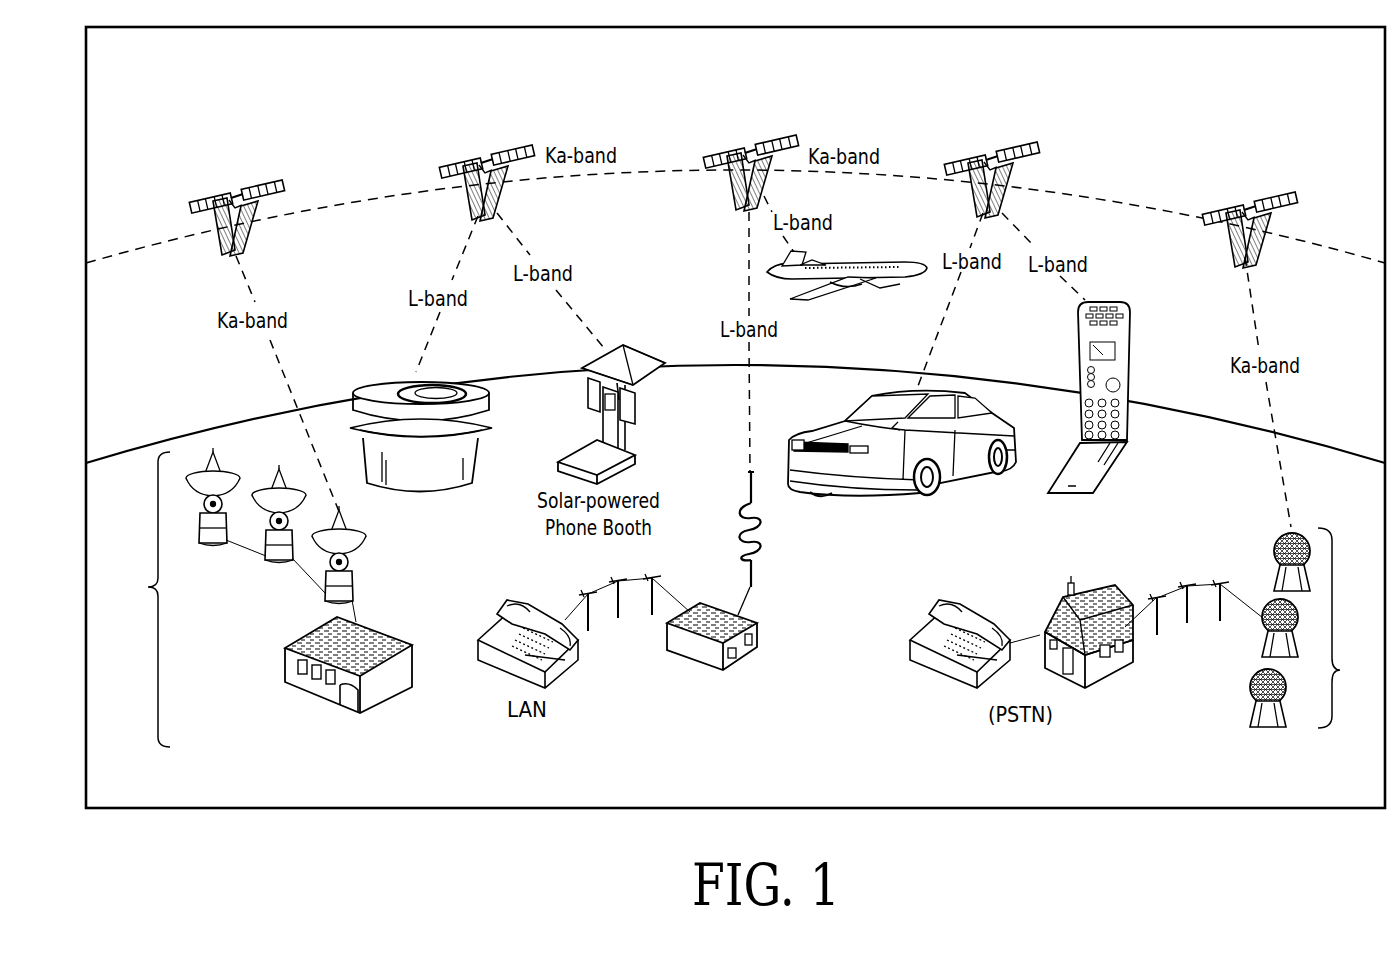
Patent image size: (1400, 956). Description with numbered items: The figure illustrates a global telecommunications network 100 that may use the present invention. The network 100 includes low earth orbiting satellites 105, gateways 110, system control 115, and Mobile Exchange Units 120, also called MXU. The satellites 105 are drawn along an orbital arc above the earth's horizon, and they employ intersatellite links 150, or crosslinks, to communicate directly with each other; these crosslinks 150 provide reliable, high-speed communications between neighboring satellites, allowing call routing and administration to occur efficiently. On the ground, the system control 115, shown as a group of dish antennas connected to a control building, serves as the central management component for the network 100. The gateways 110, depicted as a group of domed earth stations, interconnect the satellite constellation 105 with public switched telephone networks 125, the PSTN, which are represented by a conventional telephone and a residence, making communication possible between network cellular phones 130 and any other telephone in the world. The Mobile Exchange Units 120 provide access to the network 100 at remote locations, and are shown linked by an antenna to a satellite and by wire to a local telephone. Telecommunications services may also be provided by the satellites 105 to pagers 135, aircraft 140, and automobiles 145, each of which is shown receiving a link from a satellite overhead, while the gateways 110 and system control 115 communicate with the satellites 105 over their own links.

The network 100 is at (1031, 884).
The low earth orbiting satellites 105 is at (252, 184).
The gateways 110 is at (1306, 648).
The system control 115 is at (259, 597).
The Mobile Exchange Units 120 is at (762, 632).
The public switched telephone networks 125 is at (1132, 663).
The network cellular phones 130 is at (1128, 428).
The pagers 135 is at (370, 382).
The aircraft 140 is at (890, 262).
The automobiles 145 is at (850, 413).
The intersatellite links 150 is at (345, 205).